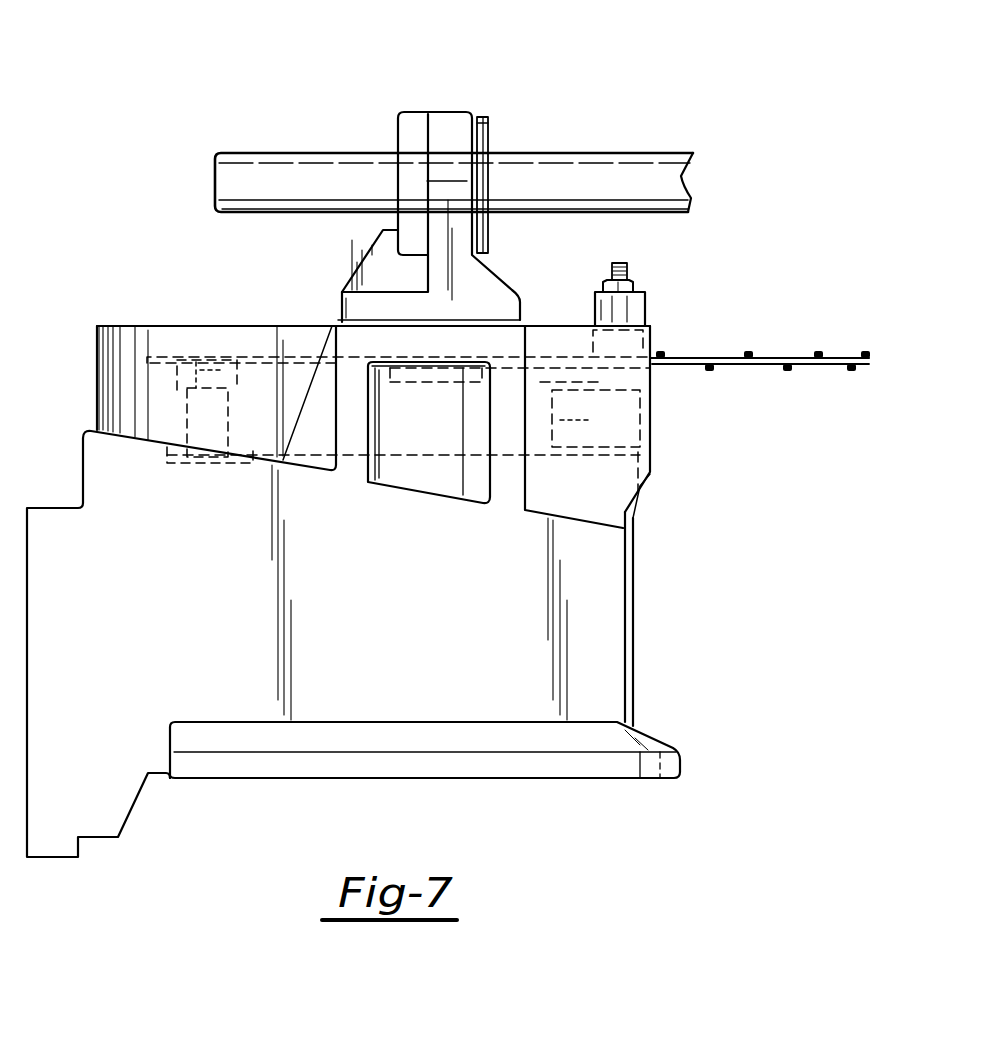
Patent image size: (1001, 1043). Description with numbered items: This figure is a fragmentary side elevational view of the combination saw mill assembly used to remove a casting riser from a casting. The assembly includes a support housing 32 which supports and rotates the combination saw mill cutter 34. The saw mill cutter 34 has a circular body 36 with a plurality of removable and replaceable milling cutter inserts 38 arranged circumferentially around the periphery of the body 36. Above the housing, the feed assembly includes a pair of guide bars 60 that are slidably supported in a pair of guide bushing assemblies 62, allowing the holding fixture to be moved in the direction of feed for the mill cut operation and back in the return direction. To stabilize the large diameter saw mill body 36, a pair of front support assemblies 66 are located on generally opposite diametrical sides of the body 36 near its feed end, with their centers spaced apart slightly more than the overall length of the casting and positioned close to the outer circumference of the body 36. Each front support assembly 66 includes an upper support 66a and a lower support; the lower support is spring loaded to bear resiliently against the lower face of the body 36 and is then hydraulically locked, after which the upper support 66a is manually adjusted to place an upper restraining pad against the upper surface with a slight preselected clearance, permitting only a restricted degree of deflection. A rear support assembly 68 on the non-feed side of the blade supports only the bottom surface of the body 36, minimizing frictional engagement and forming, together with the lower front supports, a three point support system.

The support housing 32 is at (635, 600).
The combination saw mill cutter 34 is at (760, 359).
The circular body 36 is at (807, 367).
The milling cutter inserts 38 is at (748, 360).
The guide bars 60 is at (291, 177).
The guide bushing assemblies 62 is at (447, 127).
The front support assemblies 66 is at (647, 308).
The upper support 66a is at (600, 300).
The rear support assembly 68 is at (226, 462).